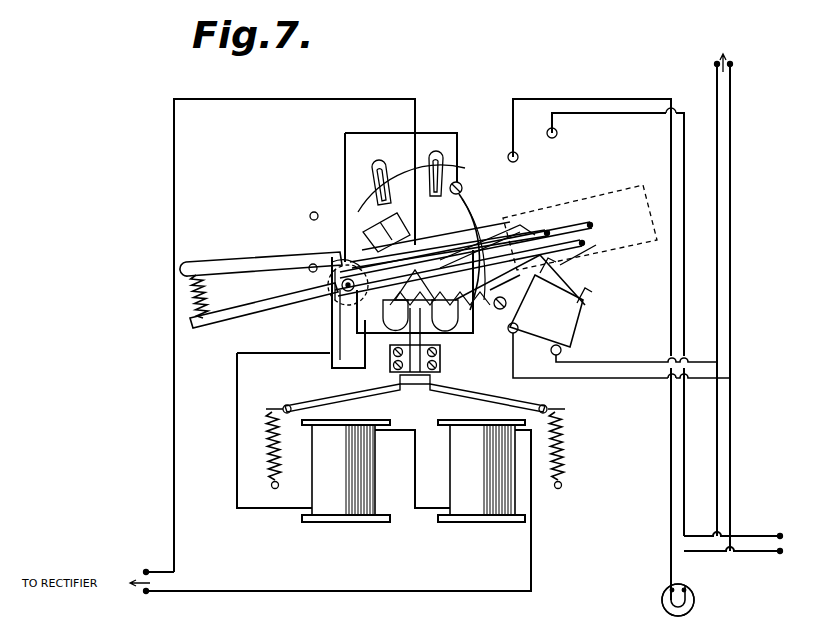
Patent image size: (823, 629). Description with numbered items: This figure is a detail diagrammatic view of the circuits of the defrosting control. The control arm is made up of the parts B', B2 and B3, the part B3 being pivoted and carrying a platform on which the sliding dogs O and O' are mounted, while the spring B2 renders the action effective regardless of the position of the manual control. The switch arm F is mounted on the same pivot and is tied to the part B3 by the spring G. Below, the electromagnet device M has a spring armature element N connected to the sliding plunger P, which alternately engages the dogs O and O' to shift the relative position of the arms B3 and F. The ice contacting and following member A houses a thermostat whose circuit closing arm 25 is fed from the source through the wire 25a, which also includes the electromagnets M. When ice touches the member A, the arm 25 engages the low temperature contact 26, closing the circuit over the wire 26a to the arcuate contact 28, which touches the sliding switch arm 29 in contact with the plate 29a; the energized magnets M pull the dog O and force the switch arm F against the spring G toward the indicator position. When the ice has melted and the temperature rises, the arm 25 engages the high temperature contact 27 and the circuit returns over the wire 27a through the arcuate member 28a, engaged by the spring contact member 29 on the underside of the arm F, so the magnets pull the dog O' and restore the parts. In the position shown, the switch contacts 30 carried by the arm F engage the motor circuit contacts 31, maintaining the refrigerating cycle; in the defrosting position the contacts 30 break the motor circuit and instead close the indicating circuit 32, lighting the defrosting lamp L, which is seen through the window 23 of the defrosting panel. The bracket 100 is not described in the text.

The window 23 is at (656, 605).
The defrosting indicator lamp L is at (695, 600).
The circuit closing arm 25 is at (567, 245).
The wire 25a is at (203, 592).
The low temperature contact 26 is at (548, 256).
The wire 26a is at (368, 90).
The high temperature contact 27 is at (495, 222).
The wire 27a is at (443, 133).
The arcuate contact 28 is at (514, 195).
The arcuate member 28a is at (462, 184).
The sliding switch arm 29 is at (502, 310).
The plate 29a is at (355, 225).
The switch contacts 30 is at (584, 302).
The motor circuit contacts 31 is at (518, 157).
The indicating circuit 32 is at (684, 410).
The bracket 100 is at (335, 332).
The ice contacting and following member A is at (618, 198).
The switch arm F is at (588, 328).
The spring G is at (360, 244).
The arm part B' is at (264, 318).
The spring B2 is at (192, 292).
The arm part B3 is at (240, 262).
The electromagnet M is at (413, 471).
The armature element N is at (315, 402).
The sliding dog O is at (405, 197).
The sliding dog O' is at (437, 165).
The sliding plunger P is at (416, 318).